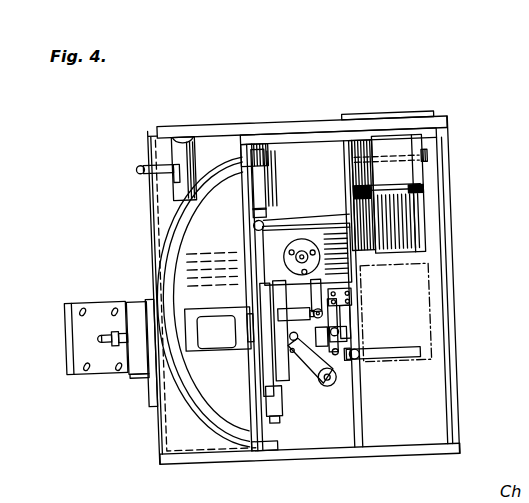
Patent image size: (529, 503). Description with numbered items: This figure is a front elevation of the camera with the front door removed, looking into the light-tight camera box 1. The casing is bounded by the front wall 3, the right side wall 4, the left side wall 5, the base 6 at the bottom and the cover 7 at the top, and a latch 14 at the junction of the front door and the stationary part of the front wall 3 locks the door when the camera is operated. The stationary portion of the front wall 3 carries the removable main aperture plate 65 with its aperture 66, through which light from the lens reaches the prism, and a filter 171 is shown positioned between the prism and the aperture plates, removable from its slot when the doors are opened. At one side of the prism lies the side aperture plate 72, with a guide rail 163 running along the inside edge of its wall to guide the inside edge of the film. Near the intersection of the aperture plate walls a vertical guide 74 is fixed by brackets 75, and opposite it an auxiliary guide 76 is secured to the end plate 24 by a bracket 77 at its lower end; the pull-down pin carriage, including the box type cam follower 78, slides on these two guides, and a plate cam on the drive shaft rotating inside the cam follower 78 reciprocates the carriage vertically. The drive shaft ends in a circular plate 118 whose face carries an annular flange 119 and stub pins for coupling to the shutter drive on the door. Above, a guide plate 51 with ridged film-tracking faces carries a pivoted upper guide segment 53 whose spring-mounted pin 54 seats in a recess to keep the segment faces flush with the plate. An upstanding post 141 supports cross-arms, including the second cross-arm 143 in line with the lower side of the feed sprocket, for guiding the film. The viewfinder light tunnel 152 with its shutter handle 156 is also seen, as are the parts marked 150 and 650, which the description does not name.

The camera box 1 is at (257, 288).
The front wall 3 is at (184, 436).
The right side wall 4 is at (150, 195).
The left side wall 5 is at (454, 236).
The base 6 is at (370, 461).
The cover 7 is at (328, 123).
The latch 14 is at (178, 145).
The end plate 24 is at (303, 143).
The guide plate 51 is at (425, 214).
The upper guide segment 53 is at (421, 177).
The pin 54 is at (435, 157).
The main aperture plate 65 is at (203, 350).
The aperture 66 is at (225, 309).
The side aperture plate 72 is at (255, 370).
The vertical guide 74 is at (271, 211).
The brackets 75 is at (267, 177).
The auxiliary guide 76 is at (346, 322).
The bracket 77 is at (338, 348).
The cam follower 78 is at (313, 222).
The circular plate 118 is at (290, 250).
The annular flange 119 is at (295, 259).
The upstanding post 141 is at (355, 432).
The second cross-arm 143 is at (409, 356).
The bracket block 150 is at (100, 360).
The light tunnel 152 is at (93, 292).
The handle 156 is at (95, 330).
The guide rail 163 is at (268, 142).
The filter 171 is at (248, 331).
The curved guide 650 is at (188, 268).